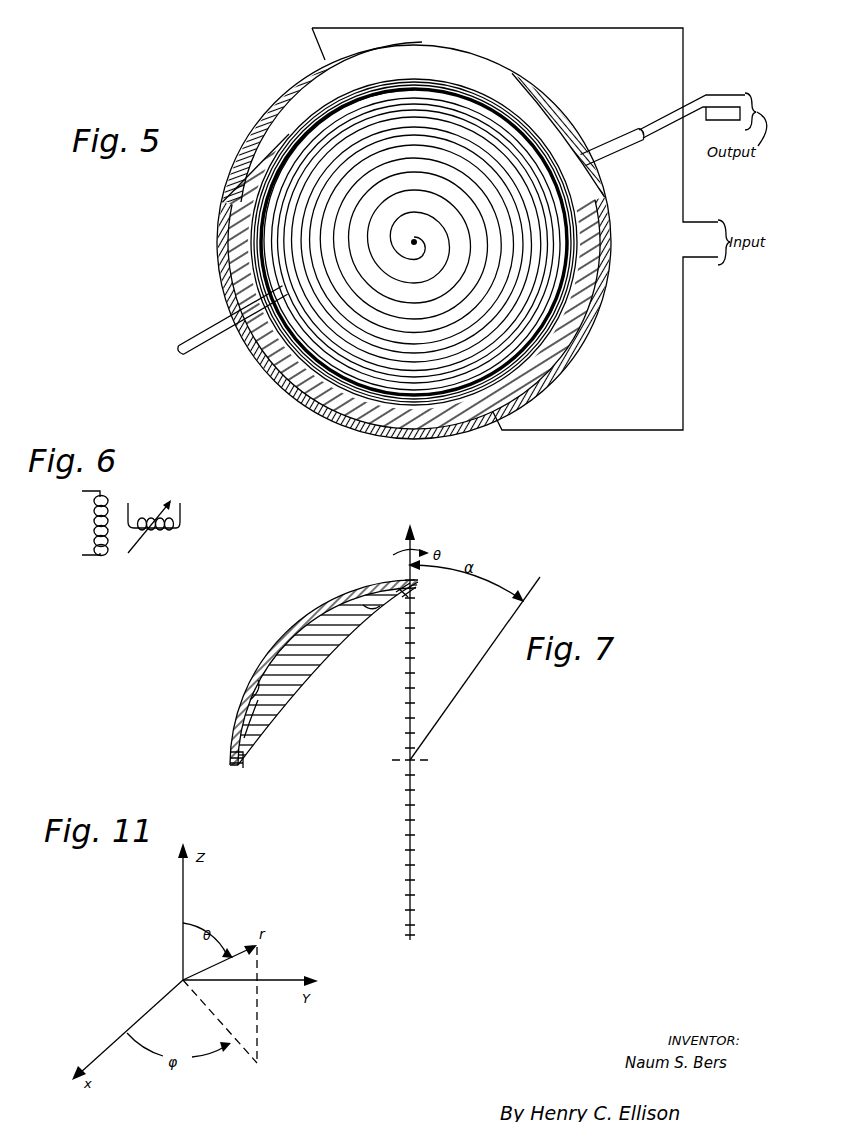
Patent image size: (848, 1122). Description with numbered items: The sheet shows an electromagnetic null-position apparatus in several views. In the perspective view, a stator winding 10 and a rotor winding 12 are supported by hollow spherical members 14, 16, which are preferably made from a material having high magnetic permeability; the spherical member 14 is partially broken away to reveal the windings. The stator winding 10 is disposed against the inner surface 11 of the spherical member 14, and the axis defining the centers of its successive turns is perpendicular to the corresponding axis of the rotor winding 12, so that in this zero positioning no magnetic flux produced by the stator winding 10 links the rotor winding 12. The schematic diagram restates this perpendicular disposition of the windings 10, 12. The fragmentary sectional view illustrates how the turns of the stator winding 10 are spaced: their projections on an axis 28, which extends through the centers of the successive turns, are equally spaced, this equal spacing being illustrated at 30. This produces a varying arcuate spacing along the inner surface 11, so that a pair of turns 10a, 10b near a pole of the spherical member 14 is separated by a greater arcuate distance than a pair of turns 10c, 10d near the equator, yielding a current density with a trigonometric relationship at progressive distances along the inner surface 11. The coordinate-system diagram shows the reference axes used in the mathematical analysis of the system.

In FIG. 5, the stator winding 10 is at (325, 380).
In FIG. 6, the stator winding 10 is at (103, 555).
In FIG. 7, the inner surface 11 is at (332, 660).
In FIG. 5, the rotor winding 12 is at (268, 346).
In FIG. 6, the rotor winding 12 is at (172, 533).
In FIG. 5, the spherical member 14 is at (381, 443).
In FIG. 7, the spherical member 14 is at (308, 599).
In FIG. 5, the spherical member 16 is at (300, 355).
In FIG. 7, the turn 10a is at (407, 590).
In FIG. 7, the turn 10b is at (363, 605).
In FIG. 7, the turn 10c is at (258, 680).
In FIG. 7, the turn 10d is at (258, 700).
In FIG. 7, the axis 28 is at (411, 801).
In FIG. 7, the equal spacing 30 is at (413, 602).